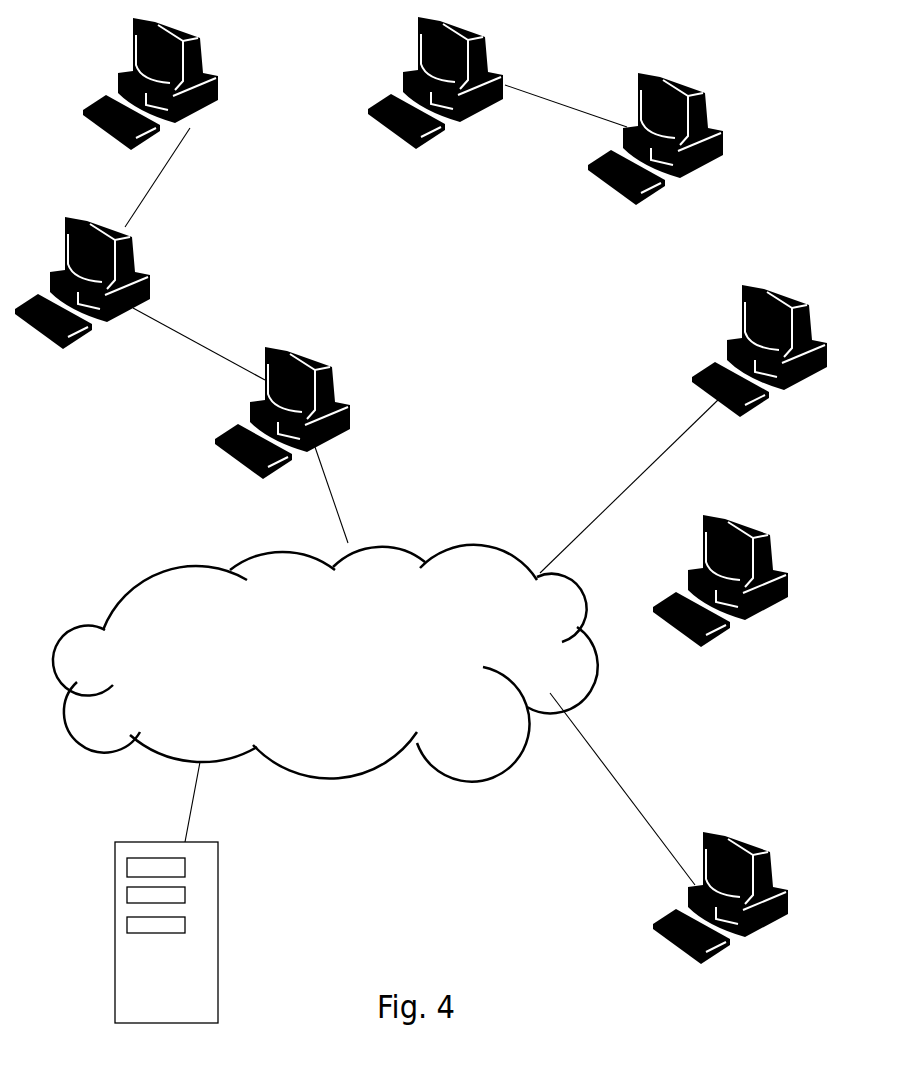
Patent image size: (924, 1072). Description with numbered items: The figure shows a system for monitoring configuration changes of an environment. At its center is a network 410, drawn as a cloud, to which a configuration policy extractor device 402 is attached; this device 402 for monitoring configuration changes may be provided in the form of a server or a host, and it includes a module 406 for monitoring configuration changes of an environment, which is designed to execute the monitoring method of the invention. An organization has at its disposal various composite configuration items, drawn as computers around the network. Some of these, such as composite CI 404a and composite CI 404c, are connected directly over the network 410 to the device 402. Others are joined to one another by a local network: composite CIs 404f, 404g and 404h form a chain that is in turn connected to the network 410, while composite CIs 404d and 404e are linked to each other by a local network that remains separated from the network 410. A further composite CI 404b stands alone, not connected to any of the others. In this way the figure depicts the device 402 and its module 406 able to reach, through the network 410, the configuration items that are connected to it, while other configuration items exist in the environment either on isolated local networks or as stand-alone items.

The configuration policy extractor device 402 is at (232, 932).
The module for monitoring configuration changes 406 is at (185, 923).
The network 410 is at (328, 661).
The composite CI 404a is at (717, 828).
The composite CI 404b is at (753, 518).
The composite CI 404c is at (732, 337).
The composite CI 404d is at (703, 167).
The composite CI 404e is at (485, 110).
The composite CI 404f is at (203, 52).
The composite CI 404g is at (138, 263).
The composite CI 404h is at (312, 350).